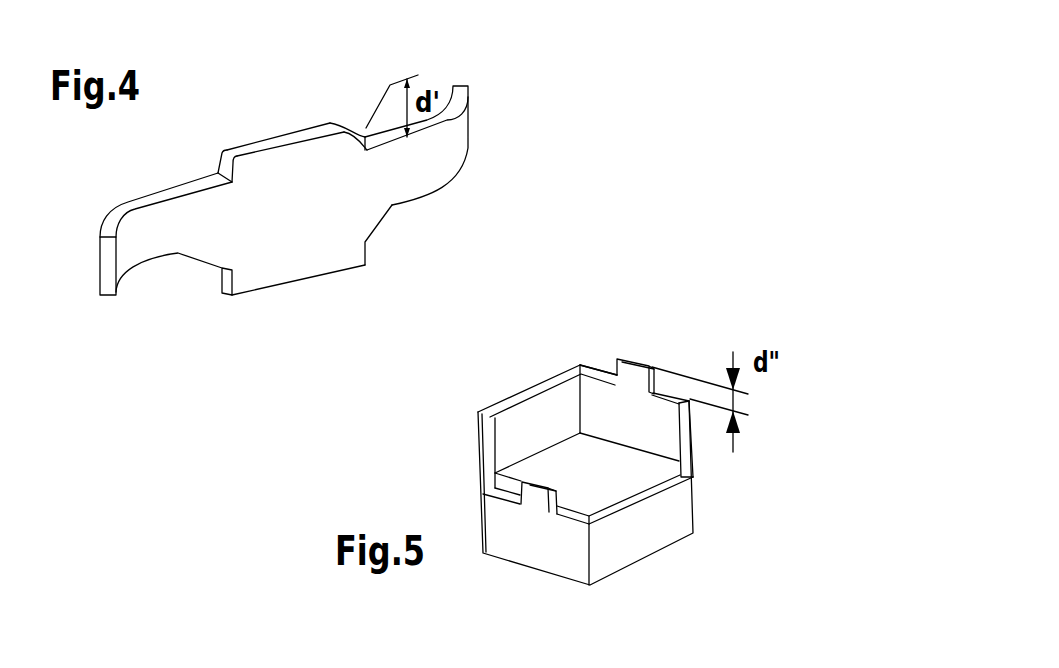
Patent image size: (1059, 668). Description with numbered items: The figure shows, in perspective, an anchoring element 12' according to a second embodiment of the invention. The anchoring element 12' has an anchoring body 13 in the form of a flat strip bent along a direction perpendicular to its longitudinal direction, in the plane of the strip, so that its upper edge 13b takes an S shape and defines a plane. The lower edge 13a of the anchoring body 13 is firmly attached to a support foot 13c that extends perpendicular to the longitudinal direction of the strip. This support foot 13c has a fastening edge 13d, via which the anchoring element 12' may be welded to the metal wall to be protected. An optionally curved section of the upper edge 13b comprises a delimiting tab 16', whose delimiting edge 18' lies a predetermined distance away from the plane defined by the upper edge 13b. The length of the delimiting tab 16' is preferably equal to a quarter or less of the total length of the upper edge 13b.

The anchoring element 12' is at (319, 204).
The anchoring body 13 is at (458, 145).
The lower edge 13a is at (133, 272).
The upper edge 13b is at (124, 208).
The support foot 13c is at (353, 257).
The fastening edge 13d is at (313, 280).
The delimiting tab 16' is at (236, 132).
The delimiting edge 18' is at (297, 106).